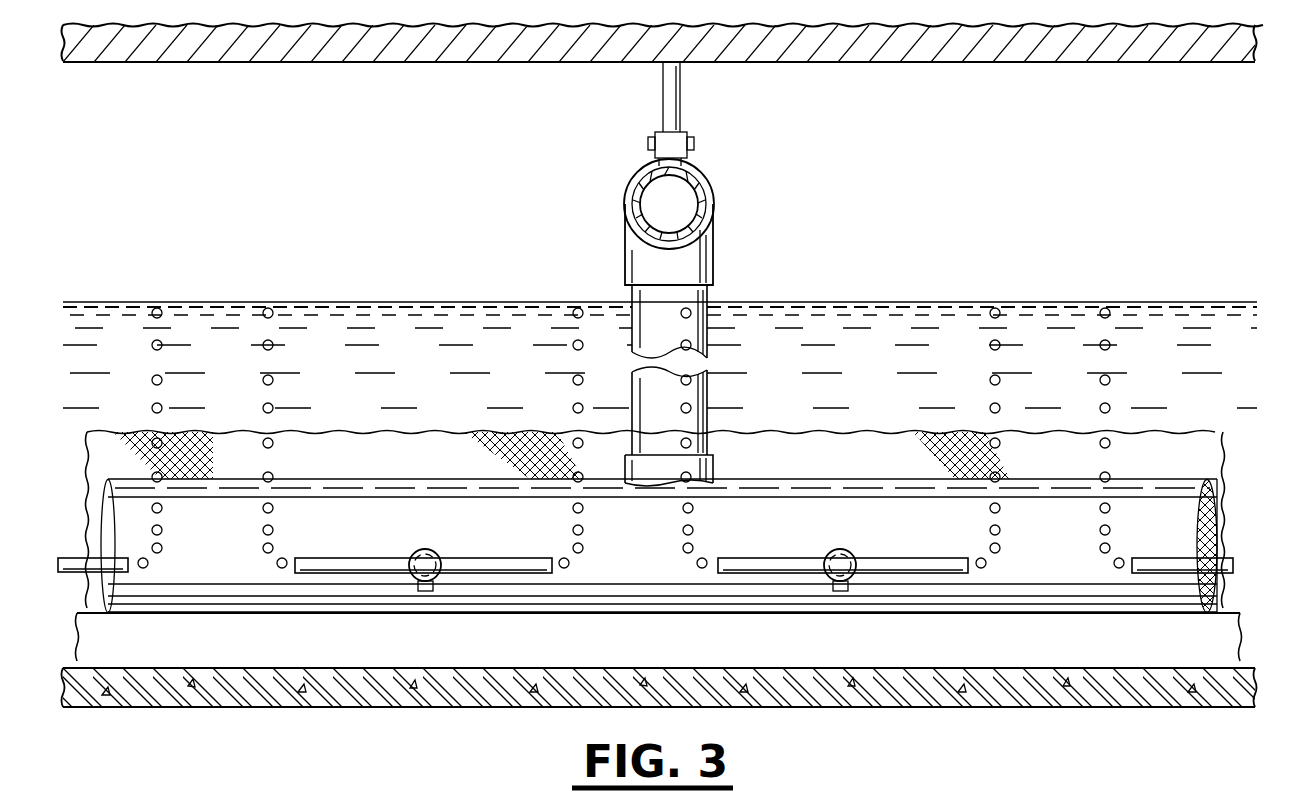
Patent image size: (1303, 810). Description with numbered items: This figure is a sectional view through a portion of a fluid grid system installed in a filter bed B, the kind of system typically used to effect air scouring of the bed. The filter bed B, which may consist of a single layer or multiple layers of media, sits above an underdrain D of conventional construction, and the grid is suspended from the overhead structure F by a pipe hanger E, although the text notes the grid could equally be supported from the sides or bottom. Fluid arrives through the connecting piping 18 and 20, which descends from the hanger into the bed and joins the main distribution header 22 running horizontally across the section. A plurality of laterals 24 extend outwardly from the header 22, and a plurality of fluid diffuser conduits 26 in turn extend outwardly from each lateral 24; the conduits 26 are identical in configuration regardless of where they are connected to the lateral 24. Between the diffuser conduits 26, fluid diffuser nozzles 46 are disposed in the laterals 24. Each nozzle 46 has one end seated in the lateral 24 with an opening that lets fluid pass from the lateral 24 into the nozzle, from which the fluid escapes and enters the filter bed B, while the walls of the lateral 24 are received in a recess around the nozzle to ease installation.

The structure F is at (470, 62).
The pipe hanger E is at (681, 97).
The connecting piping 18 is at (705, 255).
The connecting piping 20 is at (700, 395).
The filter bed B is at (1198, 302).
The main distribution header 22 is at (652, 613).
The fluid diffuser conduit 26 is at (346, 558).
The lateral 24 is at (440, 553).
The fluid diffuser nozzle 46 is at (426, 591).
The underdrain D is at (1228, 634).